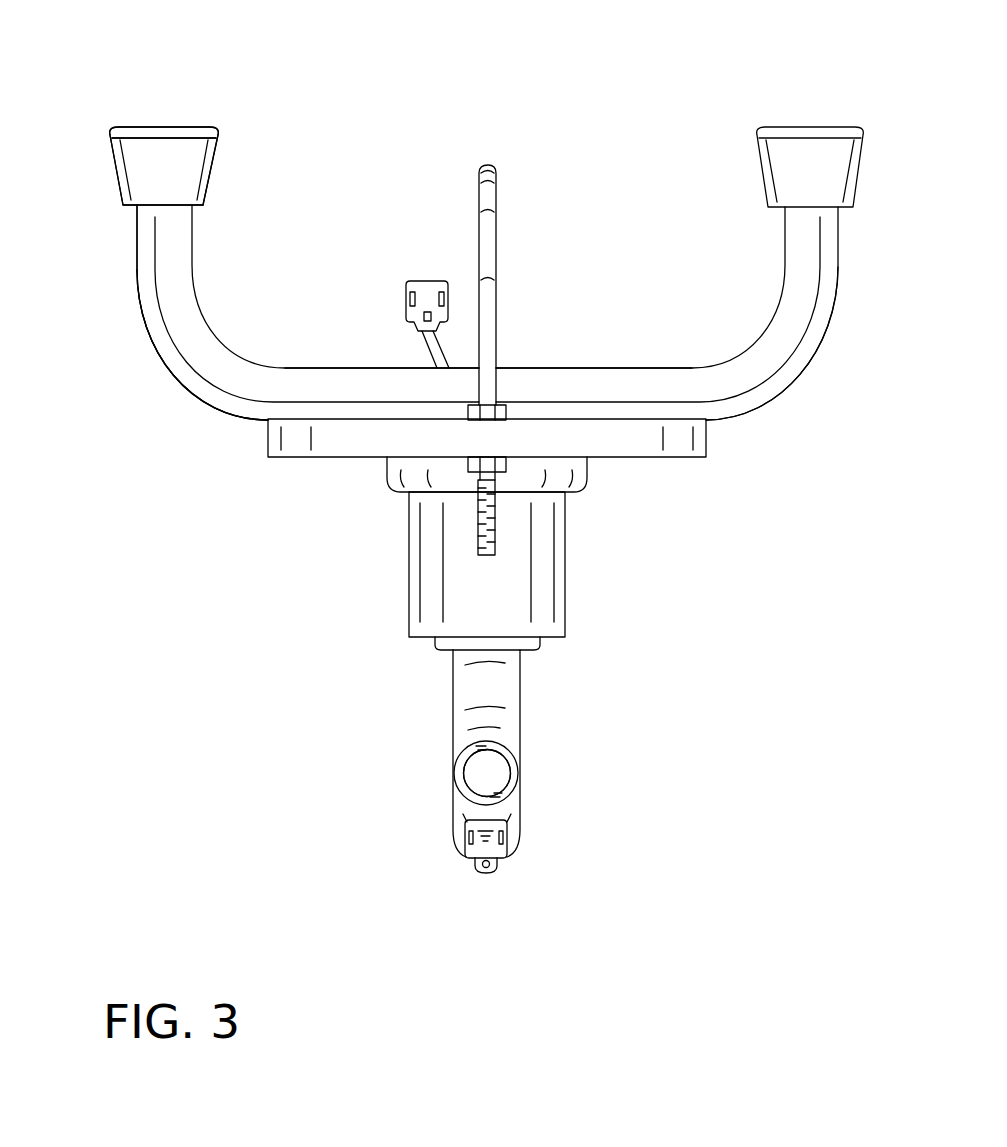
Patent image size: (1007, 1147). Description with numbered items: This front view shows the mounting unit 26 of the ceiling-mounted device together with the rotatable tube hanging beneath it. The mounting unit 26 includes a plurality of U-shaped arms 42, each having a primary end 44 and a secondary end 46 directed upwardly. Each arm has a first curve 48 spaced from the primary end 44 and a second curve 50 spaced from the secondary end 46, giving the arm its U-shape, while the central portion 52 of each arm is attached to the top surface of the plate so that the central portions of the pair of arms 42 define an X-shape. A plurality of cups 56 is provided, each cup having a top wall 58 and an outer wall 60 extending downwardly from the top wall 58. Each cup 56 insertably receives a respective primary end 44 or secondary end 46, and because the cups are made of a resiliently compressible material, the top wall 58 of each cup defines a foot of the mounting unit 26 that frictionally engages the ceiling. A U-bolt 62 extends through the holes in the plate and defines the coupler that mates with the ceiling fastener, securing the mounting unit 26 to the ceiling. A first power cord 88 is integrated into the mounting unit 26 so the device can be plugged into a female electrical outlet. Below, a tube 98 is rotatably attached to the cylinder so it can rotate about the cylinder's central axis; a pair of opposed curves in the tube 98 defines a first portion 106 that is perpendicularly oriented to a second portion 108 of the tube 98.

The mounting unit 26 is at (252, 466).
The arms 42 is at (142, 284).
The primary end 44 is at (158, 206).
The secondary end 46 is at (803, 206).
The first curve 48 is at (163, 356).
The second curve 50 is at (765, 400).
The central portion 52 is at (568, 366).
The cups 56 is at (115, 178).
The top wall 58 is at (190, 127).
The outer wall 60 is at (190, 157).
The U-bolt 62 is at (479, 225).
The first power cord 88 is at (420, 352).
The tube 98 is at (522, 745).
The first portion 106 is at (451, 672).
The second portion 108 is at (496, 745).